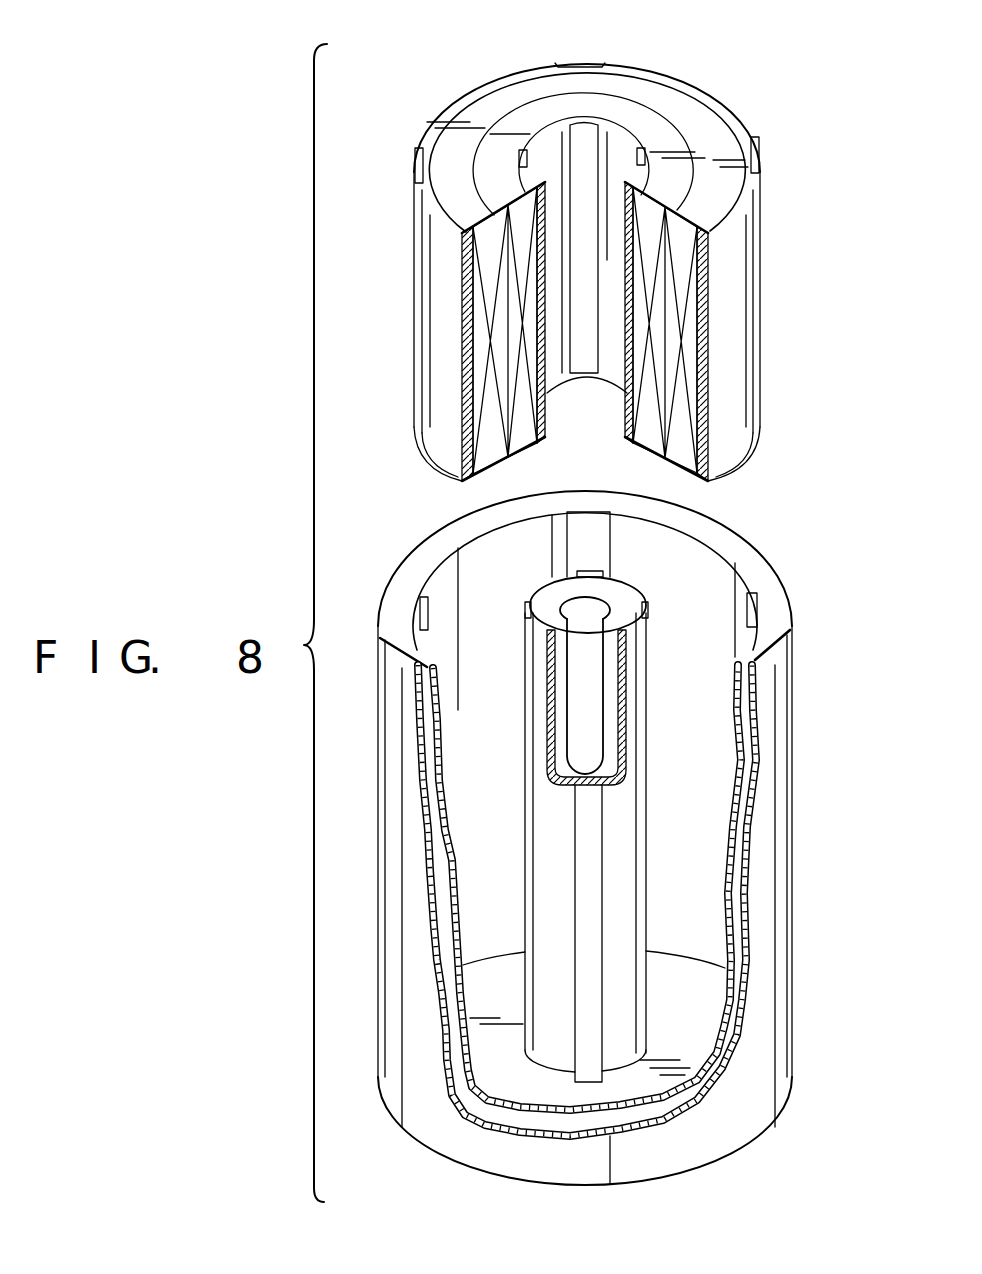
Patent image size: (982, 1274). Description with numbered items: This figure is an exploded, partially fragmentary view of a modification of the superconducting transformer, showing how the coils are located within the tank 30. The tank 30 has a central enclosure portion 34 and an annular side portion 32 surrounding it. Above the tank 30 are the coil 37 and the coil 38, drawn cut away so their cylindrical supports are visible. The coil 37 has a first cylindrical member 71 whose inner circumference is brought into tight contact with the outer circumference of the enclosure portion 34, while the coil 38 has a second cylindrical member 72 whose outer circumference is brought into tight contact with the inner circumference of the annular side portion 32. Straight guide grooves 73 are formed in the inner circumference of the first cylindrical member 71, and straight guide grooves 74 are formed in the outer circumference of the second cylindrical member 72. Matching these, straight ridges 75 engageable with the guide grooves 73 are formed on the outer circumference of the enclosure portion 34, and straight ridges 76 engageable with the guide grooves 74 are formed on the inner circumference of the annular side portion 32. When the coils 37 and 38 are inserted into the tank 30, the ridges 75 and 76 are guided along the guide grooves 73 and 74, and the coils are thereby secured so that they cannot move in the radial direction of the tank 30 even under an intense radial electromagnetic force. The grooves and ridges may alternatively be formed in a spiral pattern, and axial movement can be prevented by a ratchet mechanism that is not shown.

The tank 30 is at (812, 750).
The annular side portion 32 is at (769, 848).
The enclosure portion 34 is at (628, 838).
The coil 37 is at (524, 448).
The coil 38 is at (487, 446).
The first cylindrical member 71 is at (637, 427).
The second cylindrical member 72 is at (433, 408).
The straight guide grooves 73 is at (473, 204).
The straight guide grooves 74 is at (589, 64).
The straight ridges 75 is at (603, 573).
The straight ridges 76 is at (597, 542).